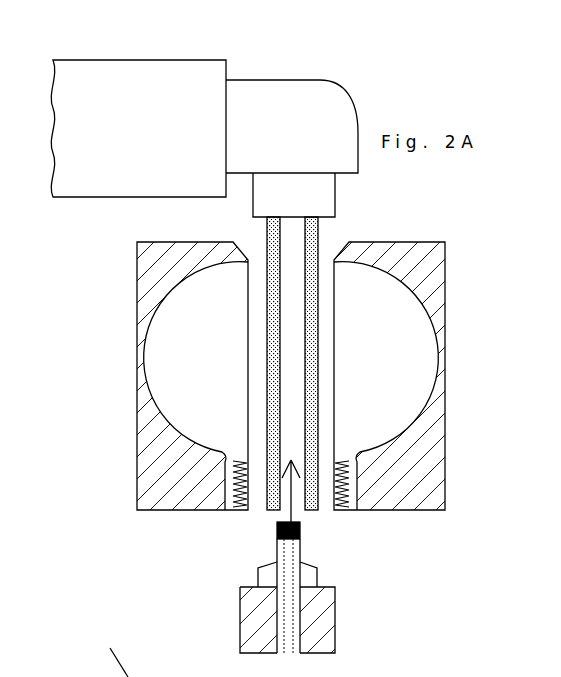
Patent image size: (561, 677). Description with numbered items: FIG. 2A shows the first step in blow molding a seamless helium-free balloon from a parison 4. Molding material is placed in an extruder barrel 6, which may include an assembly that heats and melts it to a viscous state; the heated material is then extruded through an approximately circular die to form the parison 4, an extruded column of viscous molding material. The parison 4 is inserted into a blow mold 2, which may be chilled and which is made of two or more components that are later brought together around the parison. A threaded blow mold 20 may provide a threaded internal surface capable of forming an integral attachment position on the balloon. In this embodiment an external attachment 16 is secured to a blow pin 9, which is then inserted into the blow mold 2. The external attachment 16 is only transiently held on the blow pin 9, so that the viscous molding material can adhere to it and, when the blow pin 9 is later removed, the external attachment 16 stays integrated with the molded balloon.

The blow mold 2 is at (129, 465).
The parison 4 is at (260, 305).
The extruder barrel 6 is at (194, 57).
The blow pin 9 is at (310, 549).
The external attachment 16 is at (277, 540).
The threaded blow mold 20 is at (227, 509).